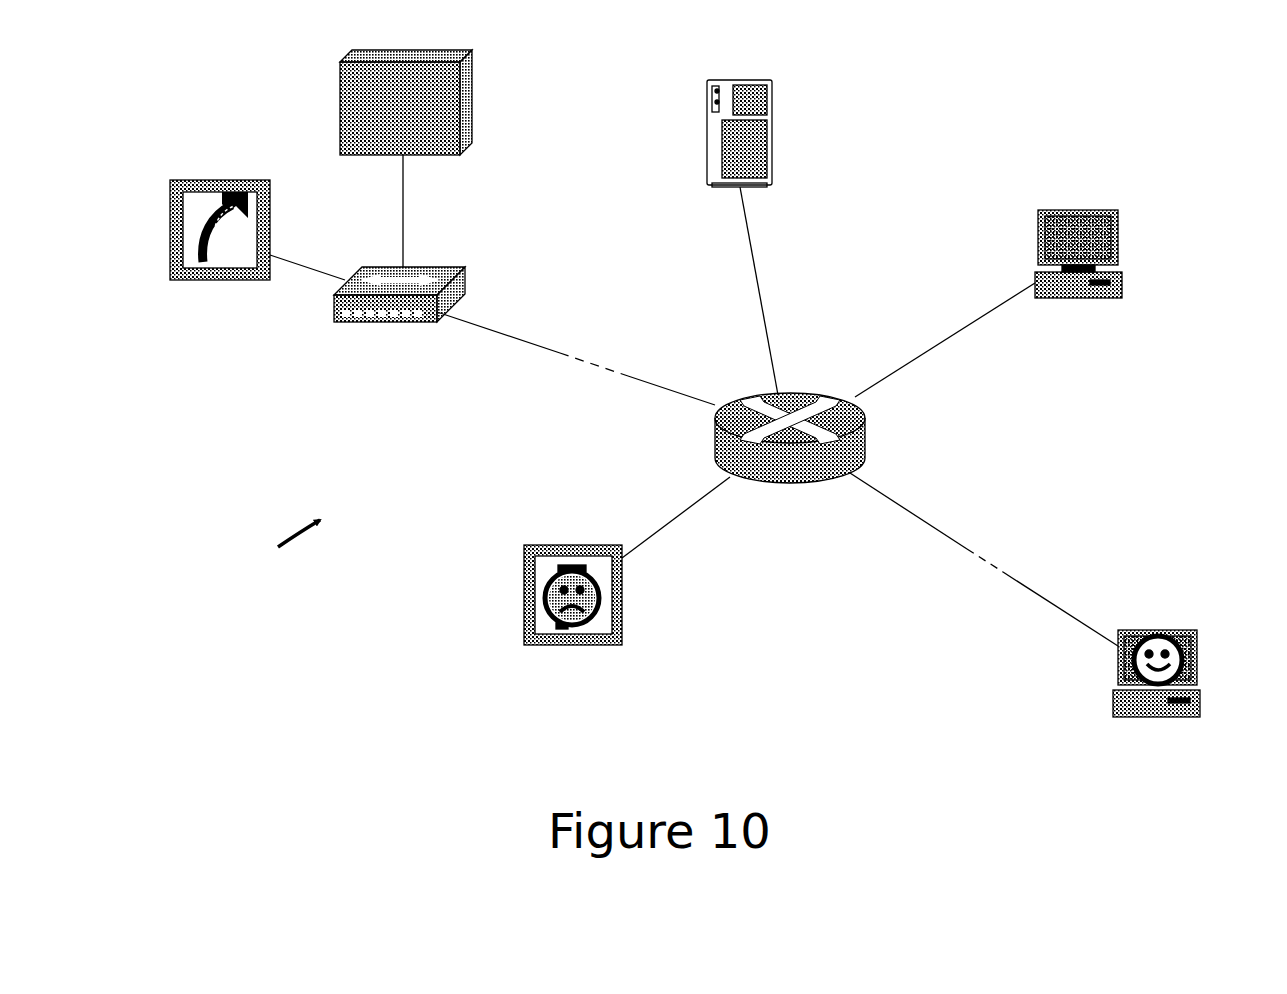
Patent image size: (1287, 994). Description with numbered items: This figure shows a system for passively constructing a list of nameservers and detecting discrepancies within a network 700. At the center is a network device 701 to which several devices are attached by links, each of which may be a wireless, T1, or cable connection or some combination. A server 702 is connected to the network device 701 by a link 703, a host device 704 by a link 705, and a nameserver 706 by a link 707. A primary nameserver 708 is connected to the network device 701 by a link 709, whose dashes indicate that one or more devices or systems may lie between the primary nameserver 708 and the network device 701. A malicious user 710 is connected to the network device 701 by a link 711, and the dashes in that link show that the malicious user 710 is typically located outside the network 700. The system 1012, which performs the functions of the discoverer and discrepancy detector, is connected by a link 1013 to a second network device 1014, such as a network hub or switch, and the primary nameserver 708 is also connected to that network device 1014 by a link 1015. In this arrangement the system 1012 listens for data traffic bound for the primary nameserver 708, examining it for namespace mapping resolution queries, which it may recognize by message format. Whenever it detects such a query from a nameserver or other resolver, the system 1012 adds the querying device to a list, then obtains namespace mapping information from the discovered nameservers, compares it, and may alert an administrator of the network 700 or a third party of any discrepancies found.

The network 700 is at (262, 552).
The network device 701 is at (865, 441).
The server 702 is at (778, 130).
The link 703 is at (765, 293).
The host device 704 is at (1120, 226).
The link 705 is at (910, 362).
The nameserver 706 is at (624, 597).
The link 707 is at (683, 530).
The primary nameserver 708 is at (168, 236).
The link 709 is at (638, 384).
The malicious user 710 is at (1162, 630).
The link 711 is at (945, 539).
The system 1012 is at (471, 103).
The link 1013 is at (405, 215).
The network device 1014 is at (468, 272).
The link 1015 is at (308, 250).